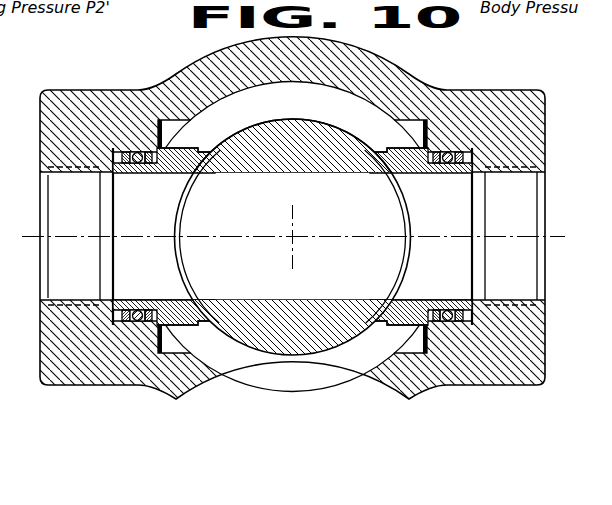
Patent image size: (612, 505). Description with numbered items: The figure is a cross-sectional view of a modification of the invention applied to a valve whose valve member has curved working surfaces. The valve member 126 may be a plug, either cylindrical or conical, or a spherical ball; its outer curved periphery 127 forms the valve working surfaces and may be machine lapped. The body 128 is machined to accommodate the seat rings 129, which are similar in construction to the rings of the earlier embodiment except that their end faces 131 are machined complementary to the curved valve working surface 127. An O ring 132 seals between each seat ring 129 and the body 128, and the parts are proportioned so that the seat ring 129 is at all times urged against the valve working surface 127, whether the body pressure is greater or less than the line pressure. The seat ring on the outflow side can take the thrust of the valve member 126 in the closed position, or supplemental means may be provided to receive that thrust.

The valve member 126 is at (276, 166).
The outer curved periphery 127 is at (339, 114).
The body 128 is at (197, 402).
The seat ring 129 is at (157, 172).
The end face 131 is at (206, 166).
The O ring 132 is at (446, 168).